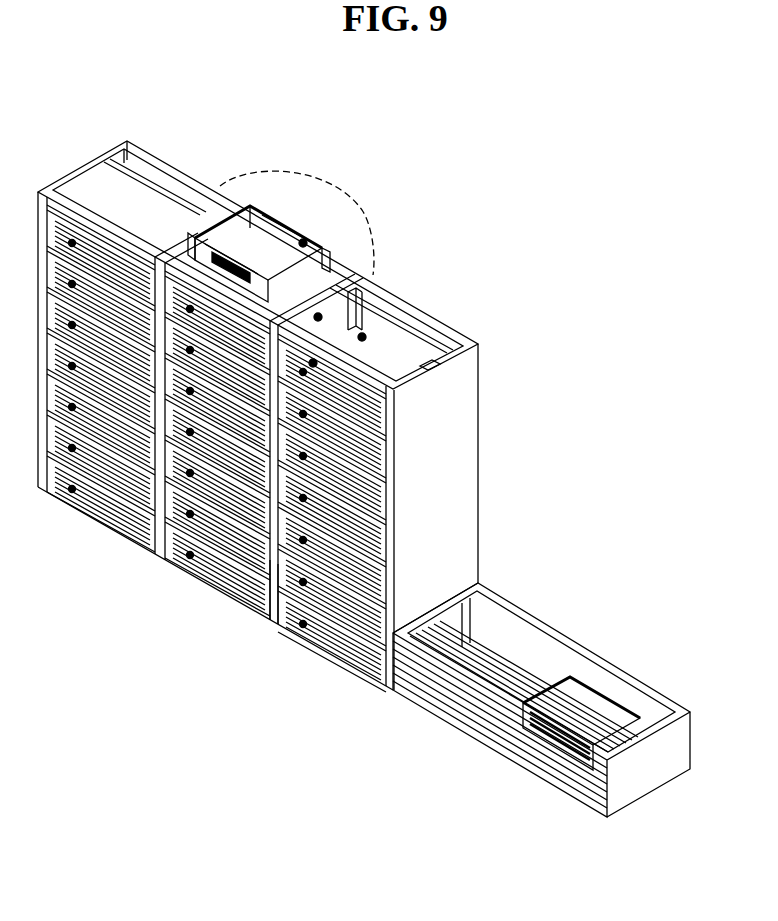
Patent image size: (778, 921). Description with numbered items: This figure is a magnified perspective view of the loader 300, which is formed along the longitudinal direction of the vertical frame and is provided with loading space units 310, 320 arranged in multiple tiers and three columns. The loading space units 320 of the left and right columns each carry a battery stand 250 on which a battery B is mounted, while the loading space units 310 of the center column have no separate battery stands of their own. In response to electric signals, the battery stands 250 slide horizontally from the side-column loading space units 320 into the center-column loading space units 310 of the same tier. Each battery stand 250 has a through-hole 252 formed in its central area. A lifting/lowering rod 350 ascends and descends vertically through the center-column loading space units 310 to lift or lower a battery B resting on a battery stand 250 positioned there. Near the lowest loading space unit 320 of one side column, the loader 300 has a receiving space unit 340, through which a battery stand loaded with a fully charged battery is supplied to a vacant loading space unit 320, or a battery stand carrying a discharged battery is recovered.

The loader 300 is at (486, 428).
The loading space unit 320 is at (150, 190).
The battery B is at (262, 236).
The battery stand 250 is at (303, 240).
The loading space unit 310 is at (348, 245).
The through-hole 252 is at (442, 366).
The lifting/lowering rod 350 is at (270, 622).
The receiving space unit 340 is at (548, 662).